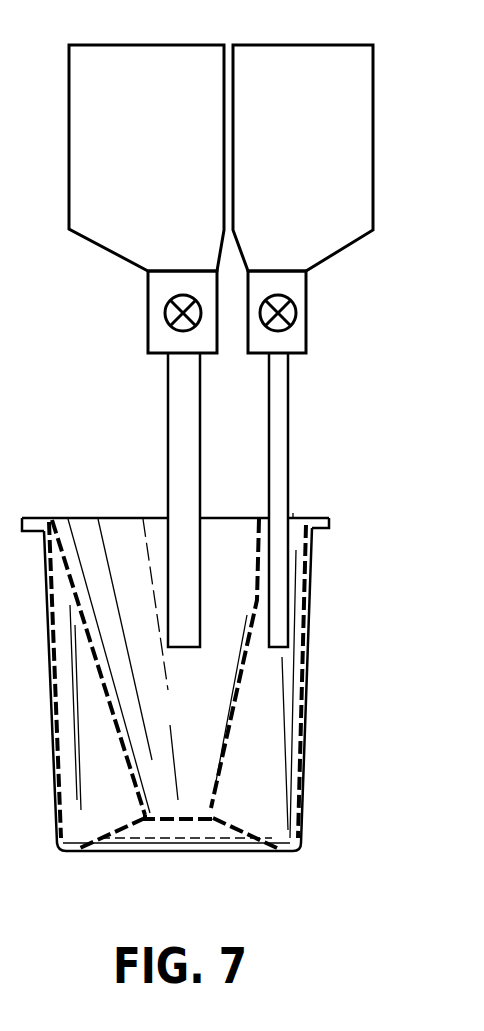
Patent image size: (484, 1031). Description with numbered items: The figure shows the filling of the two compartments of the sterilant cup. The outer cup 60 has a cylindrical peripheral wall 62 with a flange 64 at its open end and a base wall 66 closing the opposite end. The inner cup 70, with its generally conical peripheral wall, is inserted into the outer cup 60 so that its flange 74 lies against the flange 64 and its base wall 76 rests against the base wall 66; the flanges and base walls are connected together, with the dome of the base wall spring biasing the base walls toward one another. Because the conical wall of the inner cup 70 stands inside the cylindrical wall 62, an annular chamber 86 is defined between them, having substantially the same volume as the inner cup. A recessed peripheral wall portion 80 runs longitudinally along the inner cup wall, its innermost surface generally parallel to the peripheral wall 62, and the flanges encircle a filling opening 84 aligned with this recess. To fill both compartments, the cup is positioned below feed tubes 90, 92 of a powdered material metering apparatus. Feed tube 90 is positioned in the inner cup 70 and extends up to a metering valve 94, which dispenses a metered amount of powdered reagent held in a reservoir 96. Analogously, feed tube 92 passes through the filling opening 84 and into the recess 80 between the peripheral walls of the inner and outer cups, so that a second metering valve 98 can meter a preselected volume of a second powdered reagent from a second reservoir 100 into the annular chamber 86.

The outer cup 60 is at (207, 684).
The cylindrical peripheral wall 62 is at (303, 737).
The flange 64 is at (313, 530).
The base wall 66 is at (237, 840).
The inner cup portion 70 is at (120, 537).
The flange 74 is at (311, 517).
The base wall 76 is at (180, 813).
The recessed peripheral wall portion 80 is at (262, 635).
The filling opening 84 is at (294, 516).
The annular chamber 86 is at (232, 806).
The feed tube 90 is at (175, 402).
The feed tube 92 is at (275, 405).
The metering valve 94 is at (158, 315).
The reservoir 96 is at (150, 158).
The second metering valve 98 is at (298, 315).
The second reservoir 100 is at (284, 158).